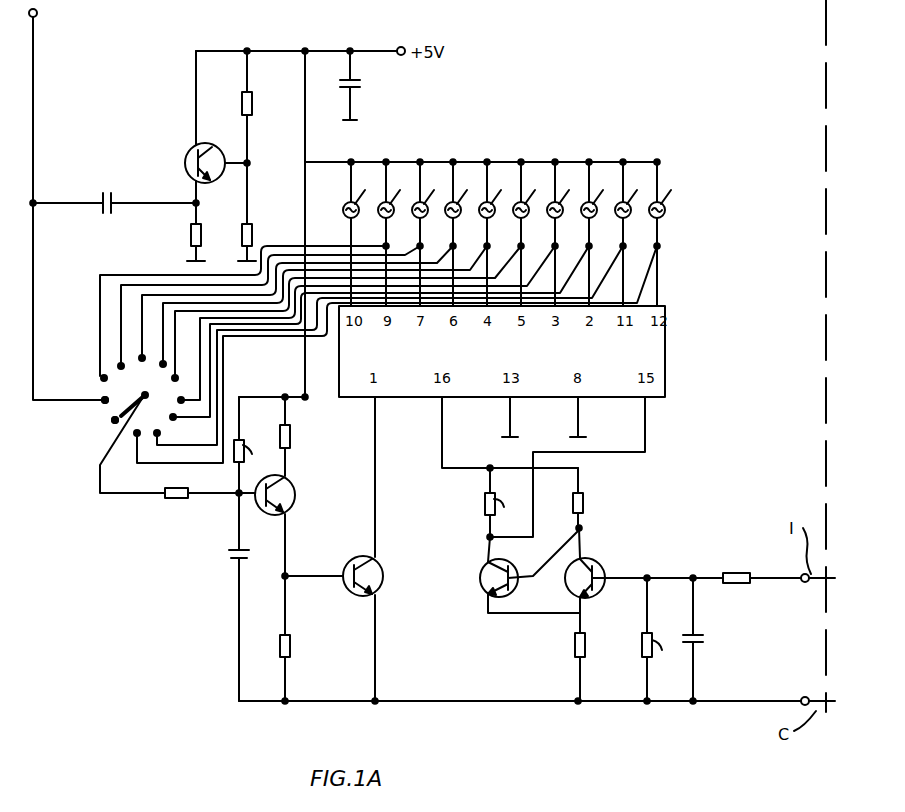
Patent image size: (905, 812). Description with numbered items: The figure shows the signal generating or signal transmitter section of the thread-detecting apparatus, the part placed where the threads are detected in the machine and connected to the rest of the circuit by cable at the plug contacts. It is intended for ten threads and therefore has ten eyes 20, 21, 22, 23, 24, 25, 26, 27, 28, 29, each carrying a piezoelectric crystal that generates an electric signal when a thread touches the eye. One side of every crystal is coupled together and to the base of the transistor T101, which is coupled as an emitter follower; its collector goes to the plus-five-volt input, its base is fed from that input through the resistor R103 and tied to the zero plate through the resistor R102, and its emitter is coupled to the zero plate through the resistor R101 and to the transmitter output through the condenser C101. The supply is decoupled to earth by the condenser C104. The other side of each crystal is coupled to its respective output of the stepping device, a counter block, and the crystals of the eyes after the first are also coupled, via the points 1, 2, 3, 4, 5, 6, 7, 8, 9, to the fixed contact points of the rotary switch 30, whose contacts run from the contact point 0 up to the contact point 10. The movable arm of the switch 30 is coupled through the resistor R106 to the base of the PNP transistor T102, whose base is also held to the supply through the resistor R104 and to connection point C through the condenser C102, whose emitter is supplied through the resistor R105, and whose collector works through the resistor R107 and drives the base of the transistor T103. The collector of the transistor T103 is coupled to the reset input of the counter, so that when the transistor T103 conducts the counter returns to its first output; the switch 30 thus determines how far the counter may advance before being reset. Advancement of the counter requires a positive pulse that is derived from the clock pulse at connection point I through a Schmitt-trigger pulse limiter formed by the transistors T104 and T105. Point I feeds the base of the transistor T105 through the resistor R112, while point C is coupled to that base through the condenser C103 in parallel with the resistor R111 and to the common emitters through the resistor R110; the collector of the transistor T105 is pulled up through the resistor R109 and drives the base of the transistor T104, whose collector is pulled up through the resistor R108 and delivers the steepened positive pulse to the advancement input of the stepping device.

The eye 20 is at (358, 232).
The eye 21 is at (393, 232).
The eye 22 is at (427, 232).
The eye 23 is at (460, 232).
The eye 24 is at (494, 232).
The eye 25 is at (528, 232).
The eye 26 is at (562, 232).
The eye 27 is at (596, 232).
The eye 28 is at (630, 232).
The eye 29 is at (665, 232).
The rotary switch 30 is at (88, 455).
The fixed contact point 10 is at (89, 434).
The fixed contact point 0 is at (96, 407).
The point / fixed contact point 1 is at (249, 304).
The point / fixed contact point 2 is at (275, 298).
The point / fixed contact point 3 is at (302, 294).
The point / fixed contact point 4 is at (330, 297).
The point / fixed contact point 5 is at (353, 304).
The point / fixed contact point 6 is at (373, 325).
The point / fixed contact point 7 is at (386, 332).
The point / fixed contact point 8 is at (395, 336).
The point / fixed contact point 9 is at (402, 345).
The transistor T101 is at (190, 155).
The transistor T102 is at (298, 525).
The transistor T103 is at (378, 560).
The transistor T104 is at (478, 572).
The transistor T105 is at (596, 565).
The resistor R101 is at (189, 237).
The resistor R102 is at (252, 225).
The resistor R103 is at (269, 107).
The resistor R104 is at (257, 445).
The resistor R105 is at (306, 436).
The resistor R106 is at (204, 483).
The resistor R107 is at (308, 638).
The resistor R108 is at (507, 502).
The resistor R109 is at (601, 498).
The resistor R110 is at (602, 667).
The resistor R111 is at (665, 639).
The resistor R112 is at (734, 566).
The condenser C101 is at (114, 193).
The condenser C102 is at (241, 597).
The condenser C103 is at (709, 639).
The condenser C104 is at (373, 85).